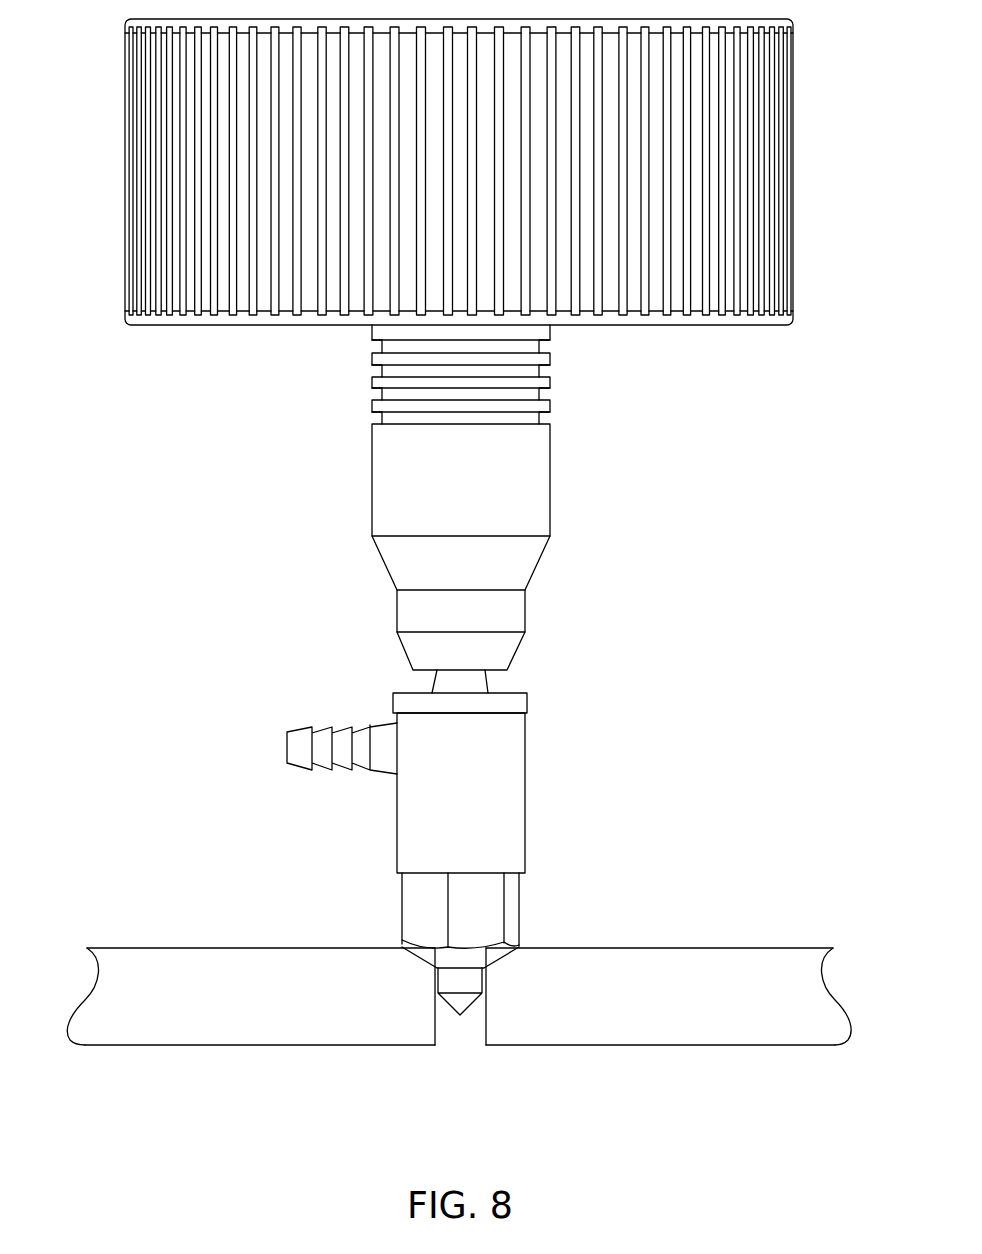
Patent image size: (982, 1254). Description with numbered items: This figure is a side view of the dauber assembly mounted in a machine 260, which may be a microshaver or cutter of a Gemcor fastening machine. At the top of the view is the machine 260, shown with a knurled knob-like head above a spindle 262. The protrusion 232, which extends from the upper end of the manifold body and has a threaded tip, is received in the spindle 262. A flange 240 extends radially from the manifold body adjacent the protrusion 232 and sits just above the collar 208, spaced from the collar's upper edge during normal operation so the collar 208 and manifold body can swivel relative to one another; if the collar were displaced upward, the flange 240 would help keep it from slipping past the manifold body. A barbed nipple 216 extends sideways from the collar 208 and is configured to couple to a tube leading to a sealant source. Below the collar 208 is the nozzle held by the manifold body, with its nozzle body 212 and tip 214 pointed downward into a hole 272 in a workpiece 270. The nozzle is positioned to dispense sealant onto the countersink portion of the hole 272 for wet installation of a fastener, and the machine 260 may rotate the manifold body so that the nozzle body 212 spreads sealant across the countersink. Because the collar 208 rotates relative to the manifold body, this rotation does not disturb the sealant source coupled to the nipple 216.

The machine 260 is at (83, 291).
The spindle 262 is at (510, 611).
The protrusion 232 is at (487, 682).
The flange 240 is at (522, 702).
The collar 208 is at (508, 792).
The barbed nipple 216 is at (298, 740).
The nozzle body 212 is at (410, 903).
The tip 214 is at (467, 982).
The workpiece 270 is at (225, 957).
The hole 272 is at (435, 1028).